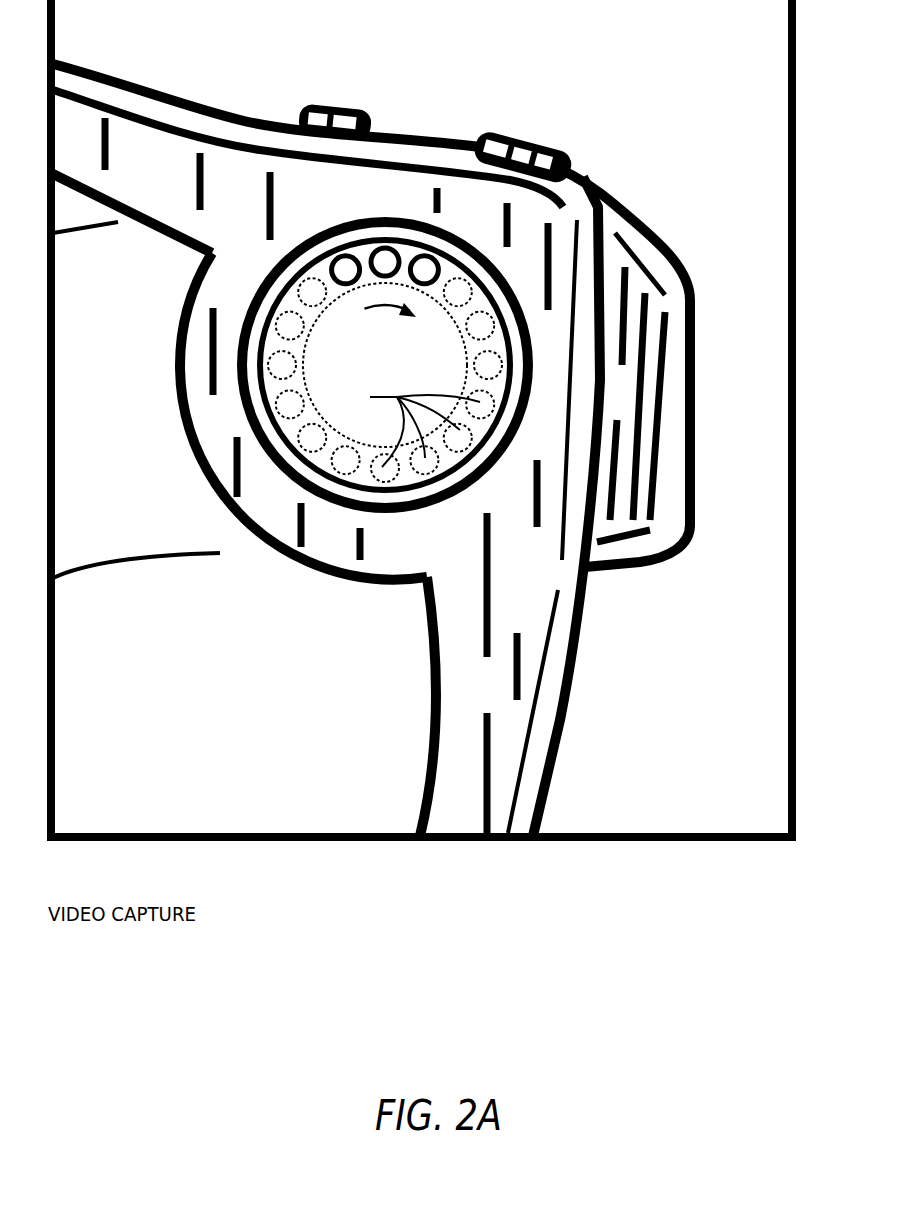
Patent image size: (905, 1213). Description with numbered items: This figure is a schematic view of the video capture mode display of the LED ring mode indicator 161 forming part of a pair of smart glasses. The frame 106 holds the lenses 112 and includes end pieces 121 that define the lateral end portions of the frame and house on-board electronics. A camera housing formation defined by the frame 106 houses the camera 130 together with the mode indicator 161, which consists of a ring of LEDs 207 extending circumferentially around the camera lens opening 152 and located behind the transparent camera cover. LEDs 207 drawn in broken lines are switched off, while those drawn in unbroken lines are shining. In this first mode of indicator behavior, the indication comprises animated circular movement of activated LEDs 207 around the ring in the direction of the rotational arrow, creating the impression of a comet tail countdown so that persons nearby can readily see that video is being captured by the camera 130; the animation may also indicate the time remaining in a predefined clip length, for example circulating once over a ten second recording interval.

The frame 106 is at (237, 167).
The lenses 112 is at (197, 704).
The end pieces 121 is at (570, 264).
The camera 130 is at (405, 372).
The camera lens opening 152 is at (306, 342).
The mode indicator 161 is at (363, 246).
The LEDs 207 is at (402, 423).